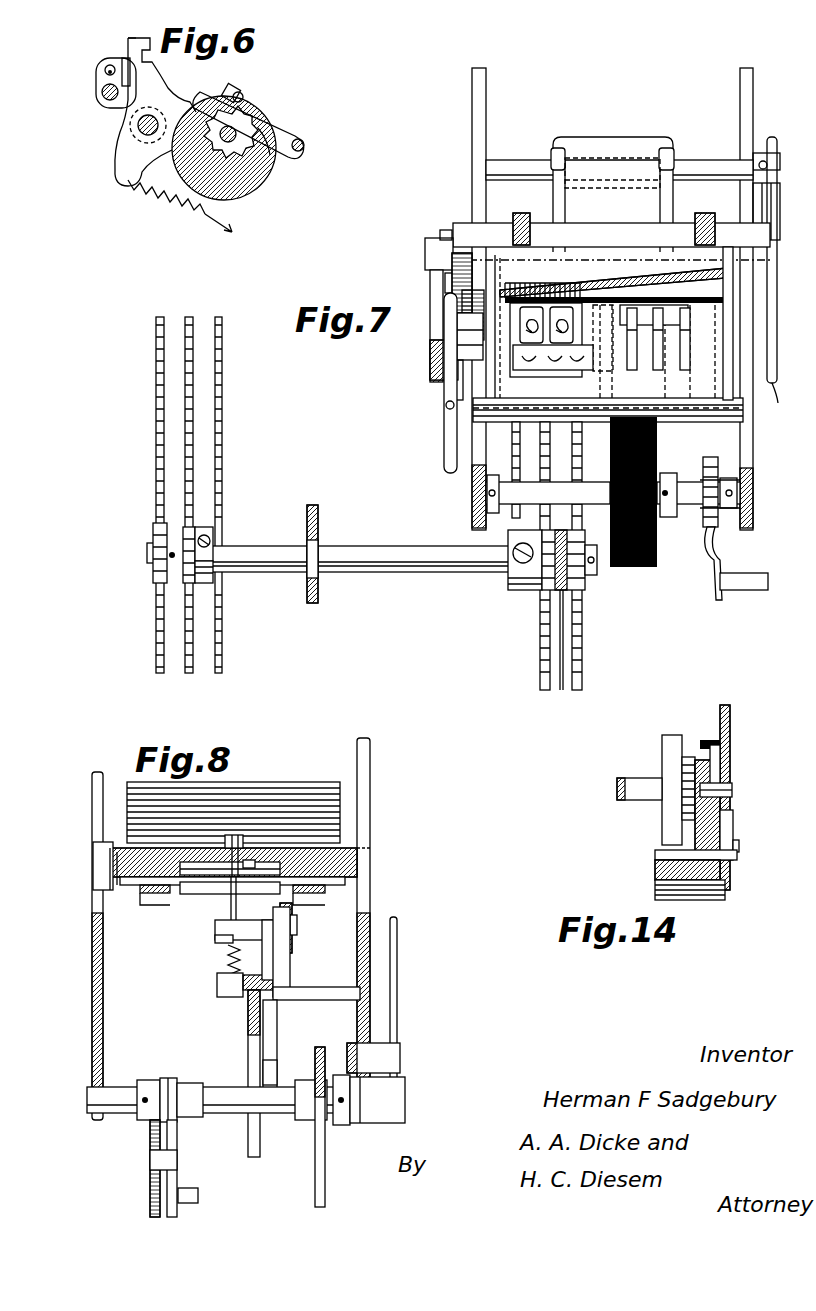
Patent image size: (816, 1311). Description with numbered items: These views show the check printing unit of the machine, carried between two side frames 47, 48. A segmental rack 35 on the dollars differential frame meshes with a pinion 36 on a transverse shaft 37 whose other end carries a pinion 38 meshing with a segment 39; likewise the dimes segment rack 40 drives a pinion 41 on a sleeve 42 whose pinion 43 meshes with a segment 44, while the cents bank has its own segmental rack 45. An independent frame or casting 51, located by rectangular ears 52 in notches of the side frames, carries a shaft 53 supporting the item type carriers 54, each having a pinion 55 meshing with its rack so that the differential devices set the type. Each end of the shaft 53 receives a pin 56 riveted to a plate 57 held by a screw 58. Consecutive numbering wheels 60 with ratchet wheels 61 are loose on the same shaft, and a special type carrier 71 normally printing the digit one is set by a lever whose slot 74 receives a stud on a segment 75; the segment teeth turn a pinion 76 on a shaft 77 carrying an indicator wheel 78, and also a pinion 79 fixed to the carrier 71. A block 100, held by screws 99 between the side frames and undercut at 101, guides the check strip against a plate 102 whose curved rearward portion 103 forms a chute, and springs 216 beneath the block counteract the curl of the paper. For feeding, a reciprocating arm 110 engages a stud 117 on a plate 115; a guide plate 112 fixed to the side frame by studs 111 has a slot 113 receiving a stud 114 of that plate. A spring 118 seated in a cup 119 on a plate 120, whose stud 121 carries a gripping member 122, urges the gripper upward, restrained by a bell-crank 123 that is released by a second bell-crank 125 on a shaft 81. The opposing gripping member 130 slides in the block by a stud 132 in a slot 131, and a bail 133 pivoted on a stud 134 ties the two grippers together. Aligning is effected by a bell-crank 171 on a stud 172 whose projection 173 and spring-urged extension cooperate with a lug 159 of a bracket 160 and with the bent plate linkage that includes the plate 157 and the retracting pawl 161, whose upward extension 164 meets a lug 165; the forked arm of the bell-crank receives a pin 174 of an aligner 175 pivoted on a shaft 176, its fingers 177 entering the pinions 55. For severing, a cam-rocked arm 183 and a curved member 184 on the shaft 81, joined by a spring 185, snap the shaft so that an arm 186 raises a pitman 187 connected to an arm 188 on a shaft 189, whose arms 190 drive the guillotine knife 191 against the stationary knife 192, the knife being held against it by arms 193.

In FIG. 7, the segmental rack 35 is at (155, 672).
In FIG. 7, the pinion 36 is at (160, 578).
In FIG. 7, the transverse shaft 37 is at (148, 555).
In FIG. 7, the pinion 38 is at (584, 575).
In FIG. 7, the segment 39 is at (583, 626).
In FIG. 7, the segment rack 40 is at (194, 672).
In FIG. 7, the pinion 41 is at (188, 580).
In FIG. 7, the sleeve 42 is at (280, 562).
In FIG. 7, the pinion 43 is at (532, 585).
In FIG. 7, the segment 44 is at (540, 620).
In FIG. 7, the segmental rack 45 is at (515, 520).
In FIG. 7, the side frame 47 is at (472, 518).
In FIG. 8, the side frame 47 is at (103, 1060).
In FIG. 7, the side frame 48 is at (753, 468).
In FIG. 8, the side frame 48 is at (370, 800).
In FIG. 14, the side frame 48 is at (730, 715).
In FIG. 7, the frame or casting 51 is at (585, 345).
In FIG. 14, the frame or casting 51 is at (655, 872).
In FIG. 7, the ears 52 is at (480, 420).
In FIG. 6, the shaft 53 is at (258, 158).
In FIG. 14, the shaft 53 is at (640, 768).
In FIG. 6, the item type carriers 54 is at (262, 172).
In FIG. 7, the item type carriers 54 is at (575, 320).
In FIG. 6, the pinion 55 is at (270, 148).
In FIG. 7, the pinion 55 is at (545, 366).
In FIG. 14, the pin 56 is at (722, 783).
In FIG. 14, the plate 57 is at (733, 825).
In FIG. 14, the screw 58 is at (739, 846).
In FIG. 7, the consecutive numbering wheels 60 is at (656, 270).
In FIG. 7, the ratchet wheel 61 is at (688, 318).
In FIG. 7, the special type carrier 71 is at (735, 330).
In FIG. 14, the special type carrier 71 is at (662, 742).
In FIG. 7, the slot 74 is at (745, 590).
In FIG. 7, the segment 75 is at (724, 560).
In FIG. 8, the segment 75 is at (325, 1145).
In FIG. 7, the pinion 76 is at (712, 492).
In FIG. 7, the shaft 77 is at (690, 486).
In FIG. 7, the indicator wheel 78 is at (660, 542).
In FIG. 7, the pinion 79 is at (692, 430).
In FIG. 14, the pinion 79 is at (690, 757).
In FIG. 8, the shaft 81 is at (115, 1080).
In FIG. 8, the screws 99 is at (370, 845).
In FIG. 8, the block 100 is at (310, 848).
In FIG. 8, the undercut 101 is at (345, 880).
In FIG. 8, the plate 102 is at (325, 890).
In FIG. 8, the rearwardly extending portion 103 is at (320, 775).
In FIG. 8, the arm 110 is at (248, 1012).
In FIG. 8, the studs 111 is at (316, 987).
In FIG. 8, the guide plate 112 is at (290, 962).
In FIG. 8, the slot 113 is at (292, 905).
In FIG. 8, the stud 114 is at (297, 922).
In FIG. 8, the plate 115 is at (290, 950).
In FIG. 8, the stud 117 is at (243, 988).
In FIG. 8, the spring 118 is at (217, 980).
In FIG. 8, the cup shaped member 119 is at (215, 940).
In FIG. 8, the plate 120 is at (228, 960).
In FIG. 8, the stud 121 is at (215, 926).
In FIG. 8, the gripping member 122 is at (190, 896).
In FIG. 8, the bell-crank 123 is at (277, 1047).
In FIG. 8, the second bell-crank 125 is at (277, 1080).
In FIG. 8, the cooperating gripping member 130 is at (272, 860).
In FIG. 8, the slot 131 is at (252, 860).
In FIG. 8, the stud 132 is at (232, 835).
In FIG. 8, the bail or yoked member 133 is at (100, 862).
In FIG. 8, the stud 134 is at (93, 836).
In FIG. 7, the plate 157 is at (444, 430).
In FIG. 6, the lug 159 is at (126, 62).
In FIG. 6, the bracket 160 is at (98, 78).
In FIG. 7, the retracting pawl 161 is at (452, 300).
In FIG. 7, the upward extension 164 is at (430, 282).
In FIG. 7, the lug 165 is at (425, 262).
In FIG. 6, the bell-crank 171 is at (168, 62).
In FIG. 7, the bell-crank 171 is at (462, 355).
In FIG. 6, the stud 172 is at (136, 136).
In FIG. 6, the projection 173 is at (138, 40).
In FIG. 6, the pin 174 is at (236, 92).
In FIG. 7, the pin 174 is at (435, 365).
In FIG. 6, the aligner 175 is at (268, 118).
In FIG. 7, the aligner 175 is at (604, 339).
In FIG. 6, the shaft 176 is at (304, 142).
In FIG. 7, the shaft 176 is at (460, 395).
In FIG. 14, the shaft 176 is at (655, 856).
In FIG. 6, the aligning fingers 177 is at (242, 96).
In FIG. 7, the aligning fingers 177 is at (578, 300).
In FIG. 8, the arm 183 is at (177, 1145).
In FIG. 8, the curved member 184 is at (150, 1143).
In FIG. 8, the spring 185 is at (188, 1188).
In FIG. 8, the arm 186 is at (405, 1090).
In FIG. 7, the pitman 187 is at (773, 392).
In FIG. 8, the pitman 187 is at (397, 1018).
In FIG. 7, the arm 188 is at (772, 138).
In FIG. 7, the shaft 189 is at (525, 160).
In FIG. 7, the forwardly extending arms 190 is at (568, 156).
In FIG. 7, the slidable guillotine knife 191 is at (650, 152).
In FIG. 14, the slidable guillotine knife 191 is at (710, 740).
In FIG. 7, the stationary knife 192 is at (716, 240).
In FIG. 7, the arms 193 is at (445, 285).
In FIG. 14, the arms 193 is at (718, 760).
In FIG. 8, the springs 216 is at (148, 905).